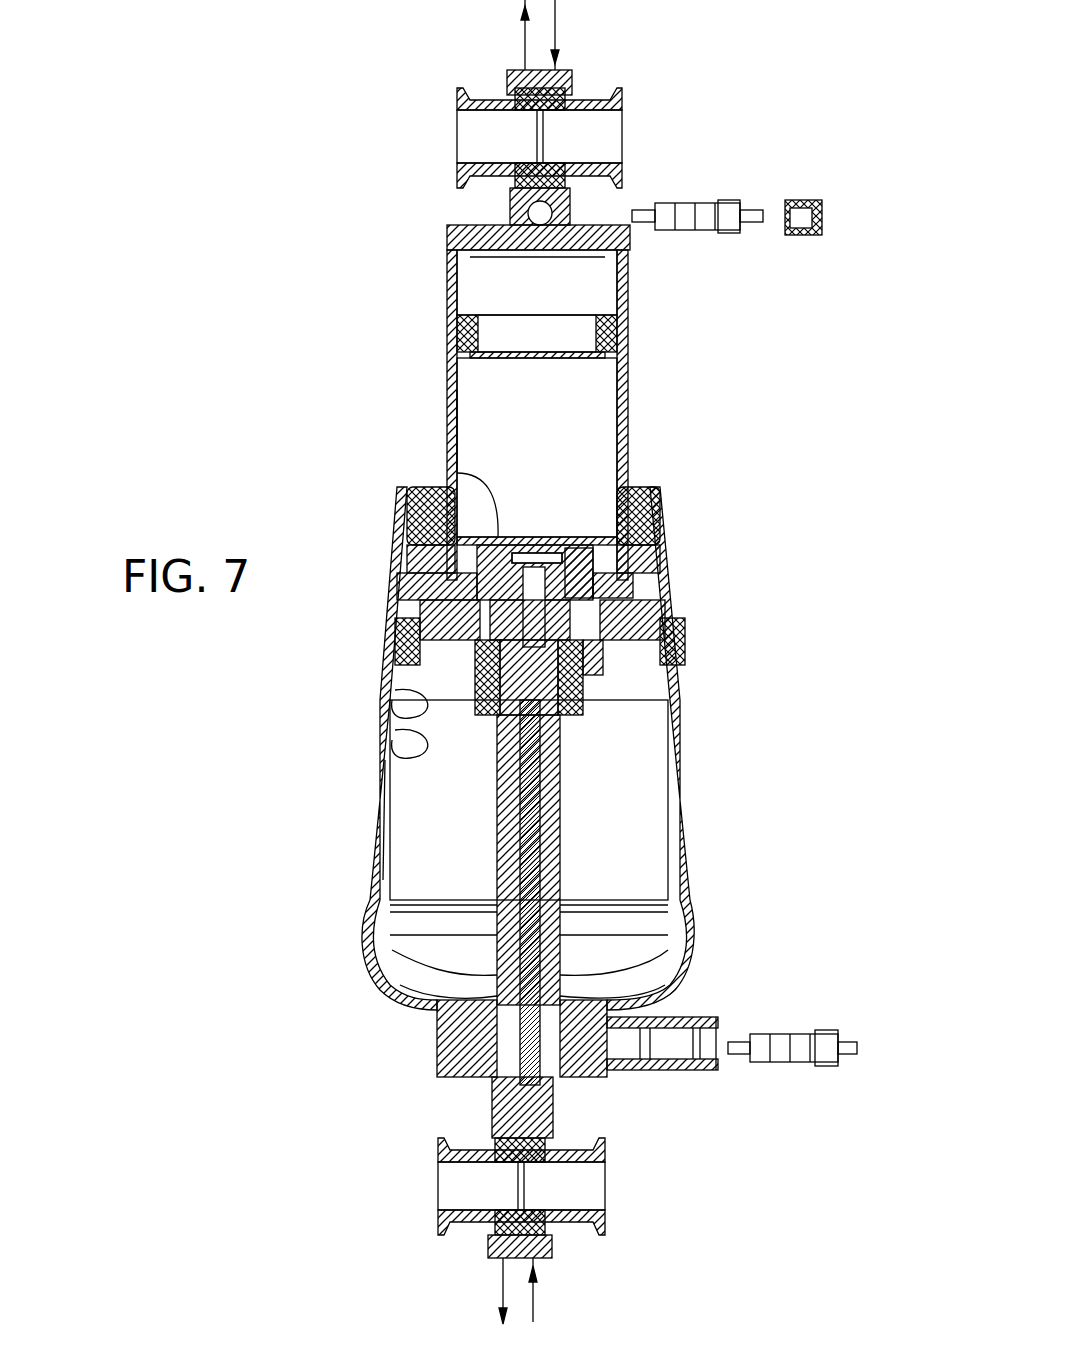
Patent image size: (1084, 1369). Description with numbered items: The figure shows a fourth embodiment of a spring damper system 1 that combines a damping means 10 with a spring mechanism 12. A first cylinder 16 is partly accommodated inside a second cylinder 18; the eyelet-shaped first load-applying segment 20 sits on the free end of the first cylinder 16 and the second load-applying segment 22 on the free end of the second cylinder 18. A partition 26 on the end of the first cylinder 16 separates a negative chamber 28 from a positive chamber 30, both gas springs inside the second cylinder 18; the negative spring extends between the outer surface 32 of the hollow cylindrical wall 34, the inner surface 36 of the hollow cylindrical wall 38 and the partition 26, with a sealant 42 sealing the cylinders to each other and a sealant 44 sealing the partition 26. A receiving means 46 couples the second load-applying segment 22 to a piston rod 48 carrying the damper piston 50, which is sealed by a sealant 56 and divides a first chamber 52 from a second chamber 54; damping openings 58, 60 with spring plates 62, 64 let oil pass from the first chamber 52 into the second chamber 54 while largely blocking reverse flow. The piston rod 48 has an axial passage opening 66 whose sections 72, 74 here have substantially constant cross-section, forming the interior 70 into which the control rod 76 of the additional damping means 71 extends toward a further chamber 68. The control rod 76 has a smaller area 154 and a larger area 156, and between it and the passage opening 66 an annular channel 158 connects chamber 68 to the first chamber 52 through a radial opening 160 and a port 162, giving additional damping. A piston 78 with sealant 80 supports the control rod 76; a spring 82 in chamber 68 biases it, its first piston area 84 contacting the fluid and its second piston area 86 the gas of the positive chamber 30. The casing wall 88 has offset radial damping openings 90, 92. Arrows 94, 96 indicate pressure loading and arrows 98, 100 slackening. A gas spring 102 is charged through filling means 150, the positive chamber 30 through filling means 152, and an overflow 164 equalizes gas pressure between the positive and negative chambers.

The spring damper system 1 is at (830, 98).
The damping means 10 is at (775, 411).
The spring mechanism 12 is at (775, 540).
The first cylinder 16 is at (628, 370).
The second cylinder 18 is at (676, 722).
The first load-applying segment 20 is at (606, 123).
The second load-applying segment 22 is at (625, 1205).
The partition 26 is at (410, 655).
The negative chamber 28 is at (413, 620).
The positive chamber 30 is at (412, 800).
The outer surface 32 is at (452, 418).
The hollow cylindrical wall 34 is at (452, 372).
The inner surface 36 is at (400, 738).
The hollow cylindrical wall 38 is at (388, 833).
The sealant 42 is at (655, 510).
The sealant 44 is at (652, 628).
The receiving means 46 is at (662, 990).
The piston rod 48 is at (500, 775).
The damper piston 50 is at (416, 502).
The first chamber 52 is at (586, 432).
The second chamber 54 is at (662, 612).
The sealant 56 is at (640, 578).
The damping opening 58 is at (655, 530).
The damping opening 60 is at (420, 535).
The spring plate 62 is at (645, 606).
The spring plate 64 is at (425, 612).
The passage opening 66 is at (605, 590).
The further chamber 68 is at (372, 926).
The interior of piston rod 70 is at (457, 447).
The additional damping means 71 is at (412, 960).
The section of passage opening 72 is at (600, 888).
The section of passage opening 74 is at (470, 555).
The control rod 76 is at (600, 866).
The piston 78 is at (610, 1085).
The sealant 80 is at (492, 1082).
The spring 82 is at (648, 1017).
The first piston area 84 is at (376, 962).
The second piston area 86 is at (495, 1132).
The casing wall 88 is at (600, 846).
The damping opening 90 is at (660, 652).
The damping opening 92 is at (410, 630).
The arrow 94 is at (555, 36).
The arrow 96 is at (533, 1290).
The arrow 98 is at (525, 34).
The arrow 100 is at (503, 1290).
The spring 102 is at (478, 282).
The filling means 150 is at (763, 177).
The filling means 152 is at (806, 1009).
The area of control rod 154 is at (600, 822).
The area of control rod 156 is at (665, 692).
The annular channel 158 is at (600, 800).
The opening 160 is at (400, 696).
The port 162 is at (410, 678).
The overflow 164 is at (400, 716).